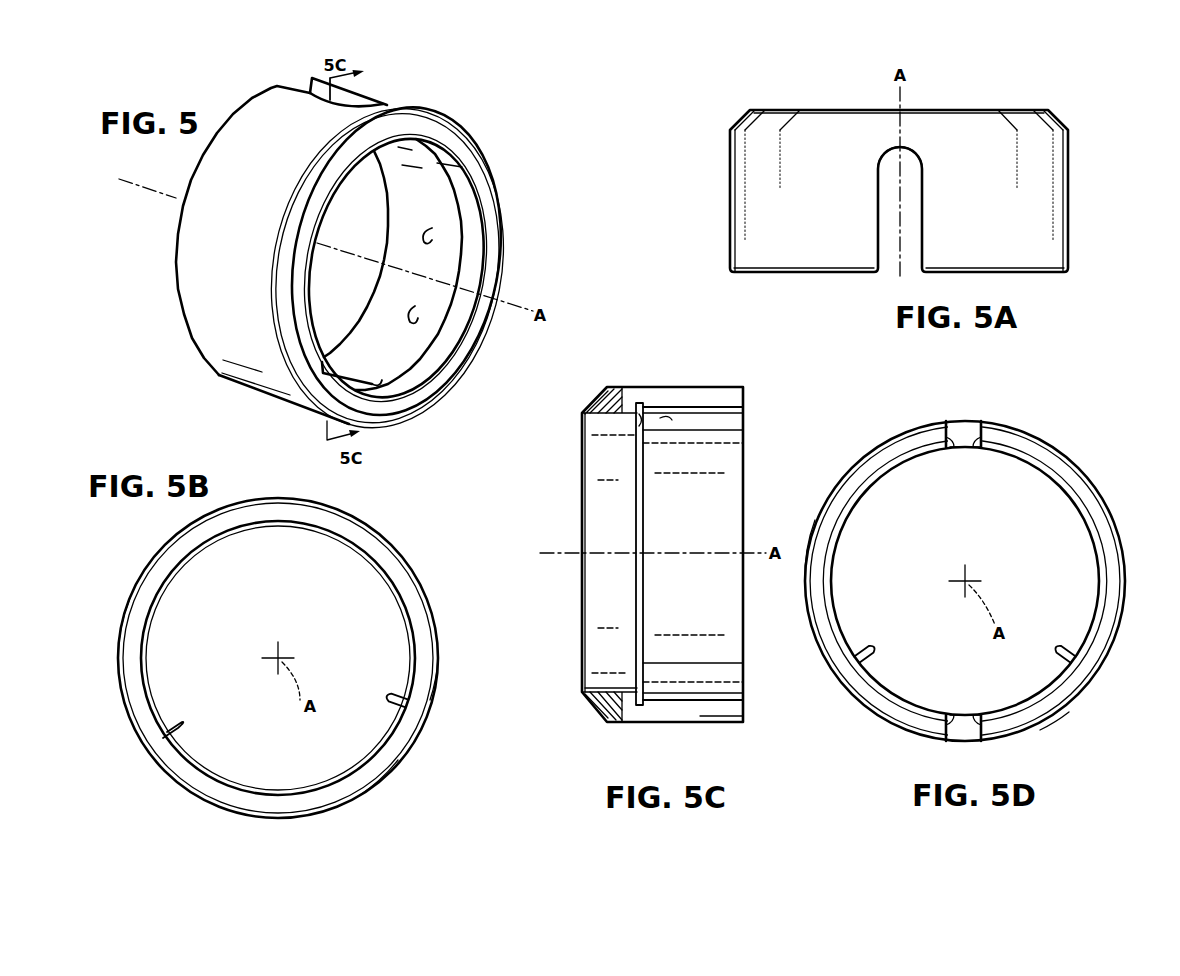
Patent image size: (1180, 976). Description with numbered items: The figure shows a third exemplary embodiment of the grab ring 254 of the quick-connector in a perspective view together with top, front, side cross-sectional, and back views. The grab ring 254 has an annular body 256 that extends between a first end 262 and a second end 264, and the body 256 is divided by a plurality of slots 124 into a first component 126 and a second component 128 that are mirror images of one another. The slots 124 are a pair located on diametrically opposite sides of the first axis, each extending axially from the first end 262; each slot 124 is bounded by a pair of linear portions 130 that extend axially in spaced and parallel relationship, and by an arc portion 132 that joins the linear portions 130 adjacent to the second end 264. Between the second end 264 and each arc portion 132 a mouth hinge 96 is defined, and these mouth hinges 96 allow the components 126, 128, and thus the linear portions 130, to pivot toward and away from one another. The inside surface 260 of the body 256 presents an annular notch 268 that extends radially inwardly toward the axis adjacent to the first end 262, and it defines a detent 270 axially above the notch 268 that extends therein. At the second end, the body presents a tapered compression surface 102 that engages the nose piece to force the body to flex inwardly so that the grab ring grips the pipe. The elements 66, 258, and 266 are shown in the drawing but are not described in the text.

In FIG. 5C, the retention member 66 is at (682, 694).
In FIG. 5, the mouth hinge 96 is at (386, 104).
In FIG. 5A, the mouth hinge 96 is at (913, 136).
In FIG. 5D, the mouth hinge 96 is at (966, 430).
In FIG. 5, the compression surface 102 is at (395, 412).
In FIG. 5A, the compression surface 102 is at (1053, 115).
In FIG. 5B, the compression surface 102 is at (405, 588).
In FIG. 5C, the compression surface 102 is at (584, 410).
In FIG. 5D, the compression surface 102 is at (1043, 436).
In FIG. 5, the slot 124 is at (308, 90).
In FIG. 5A, the slot 124 is at (918, 204).
In FIG. 5D, the slot 124 is at (973, 449).
In FIG. 5, the first component 126 is at (212, 278).
In FIG. 5A, the first component 126 is at (800, 255).
In FIG. 5B, the first component 126 is at (130, 632).
In FIG. 5C, the first component 126 is at (713, 716).
In FIG. 5D, the first component 126 is at (835, 508).
In FIG. 5, the second component 128 is at (490, 155).
In FIG. 5A, the second component 128 is at (1040, 190).
In FIG. 5B, the second component 128 is at (430, 617).
In FIG. 5D, the second component 128 is at (1104, 499).
In FIG. 5, the linear portion 130 is at (312, 94).
In FIG. 5A, the linear portion 130 is at (922, 224).
In FIG. 5D, the linear portion 130 is at (955, 449).
In FIG. 5, the arc portion 132 is at (365, 112).
In FIG. 5A, the arc portion 132 is at (912, 168).
In FIG. 5D, the arc portion 132 is at (980, 435).
In FIG. 5, the grab ring 254 is at (462, 117).
In FIG. 5A, the grab ring 254 is at (722, 193).
In FIG. 5B, the grab ring 254 is at (408, 548).
In FIG. 5C, the grab ring 254 is at (684, 382).
In FIG. 5D, the grab ring 254 is at (1085, 461).
In FIG. 5, the body 256 is at (216, 215).
In FIG. 5A, the body 256 is at (1063, 235).
In FIG. 5B, the body 256 is at (438, 670).
In FIG. 5C, the body 256 is at (713, 387).
In FIG. 5, the first end 258 is at (203, 338).
In FIG. 5A, the first end 258 is at (772, 220).
In FIG. 5B, the first end 258 is at (398, 760).
In FIG. 5C, the first end 258 is at (736, 726).
In FIG. 5D, the first end 258 is at (1069, 712).
In FIG. 5, the inside surface 260 is at (415, 306).
In FIG. 5B, the inside surface 260 is at (395, 700).
In FIG. 5D, the inside surface 260 is at (1061, 662).
In FIG. 5, the first end 262 is at (227, 122).
In FIG. 5A, the first end 262 is at (736, 278).
In FIG. 5B, the first end 262 is at (372, 565).
In FIG. 5C, the first end 262 is at (748, 404).
In FIG. 5, the second end 264 is at (328, 205).
In FIG. 5A, the second end 264 is at (752, 108).
In FIG. 5C, the second end 264 is at (578, 414).
In FIG. 5D, the second end 264 is at (878, 486).
In FIG. 5, the tab 266 is at (432, 240).
In FIG. 5B, the tab 266 is at (183, 740).
In FIG. 5C, the tab 266 is at (668, 418).
In FIG. 5D, the tab 266 is at (865, 677).
In FIG. 5, the annular notch 268 is at (370, 378).
In FIG. 5C, the annular notch 268 is at (642, 413).
In FIG. 5C, the detent 270 is at (637, 685).